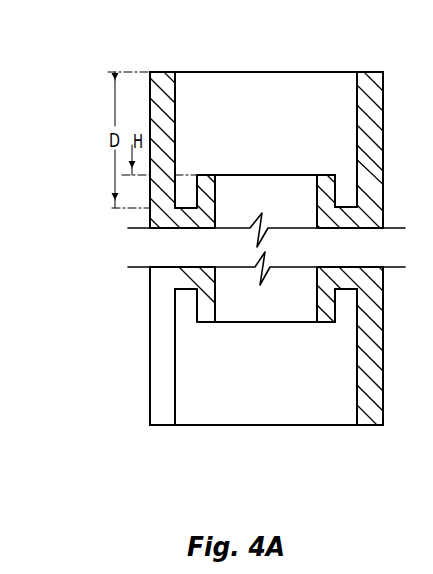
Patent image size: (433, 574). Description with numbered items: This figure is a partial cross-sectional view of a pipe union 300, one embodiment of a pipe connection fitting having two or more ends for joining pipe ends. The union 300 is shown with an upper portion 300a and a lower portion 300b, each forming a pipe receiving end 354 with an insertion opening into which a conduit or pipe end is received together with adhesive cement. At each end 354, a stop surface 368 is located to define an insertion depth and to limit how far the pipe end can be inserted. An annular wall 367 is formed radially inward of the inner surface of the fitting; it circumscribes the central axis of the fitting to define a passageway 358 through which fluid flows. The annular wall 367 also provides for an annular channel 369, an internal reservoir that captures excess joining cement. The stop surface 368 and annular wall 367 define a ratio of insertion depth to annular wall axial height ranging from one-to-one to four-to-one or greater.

The pipe union 300 is at (200, 250).
The upper housing portion 300a is at (153, 110).
The lower housing portion 300b is at (225, 347).
The end 354 is at (166, 78).
The passageway 358 is at (291, 195).
The annular wall 367 is at (332, 175).
The stop surface 368 is at (182, 238).
The annular channel 369 is at (345, 197).